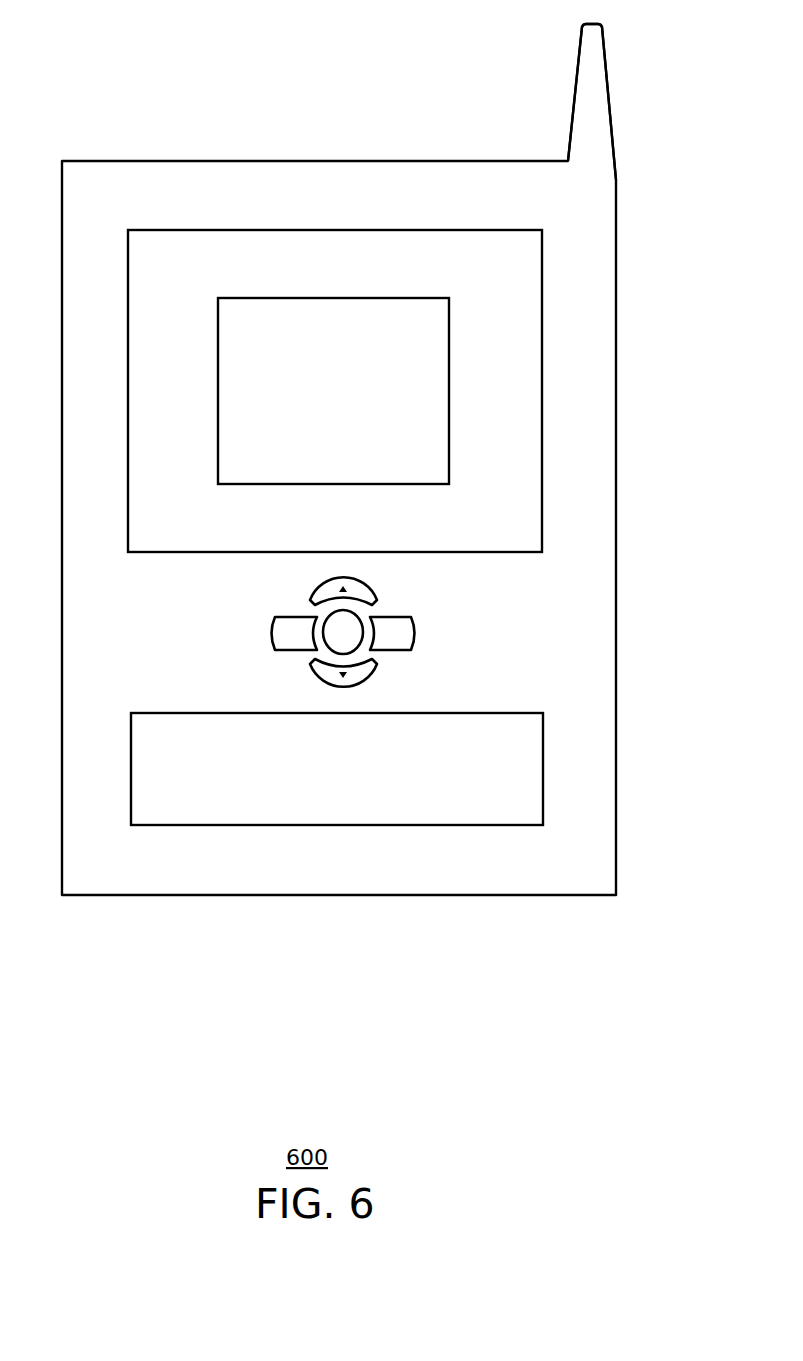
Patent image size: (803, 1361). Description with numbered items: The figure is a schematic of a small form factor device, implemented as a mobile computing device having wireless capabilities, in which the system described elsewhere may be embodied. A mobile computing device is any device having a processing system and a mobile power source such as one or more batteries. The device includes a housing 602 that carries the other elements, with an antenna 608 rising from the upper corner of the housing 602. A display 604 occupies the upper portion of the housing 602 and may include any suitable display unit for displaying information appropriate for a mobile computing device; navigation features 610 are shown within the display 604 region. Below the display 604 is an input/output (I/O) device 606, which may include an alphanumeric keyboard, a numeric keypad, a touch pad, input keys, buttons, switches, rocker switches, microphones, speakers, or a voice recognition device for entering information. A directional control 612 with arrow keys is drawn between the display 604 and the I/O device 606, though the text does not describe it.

The housing 602 is at (616, 511).
The display 604 is at (485, 229).
The input/output (I/O) device 606 is at (544, 742).
The antenna 608 is at (578, 71).
The navigation features 610 is at (392, 297).
The navigation control (d-pad) 612 is at (430, 620).